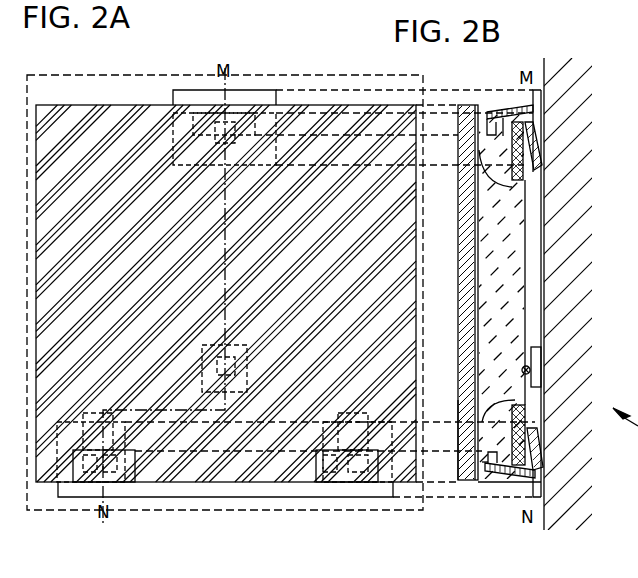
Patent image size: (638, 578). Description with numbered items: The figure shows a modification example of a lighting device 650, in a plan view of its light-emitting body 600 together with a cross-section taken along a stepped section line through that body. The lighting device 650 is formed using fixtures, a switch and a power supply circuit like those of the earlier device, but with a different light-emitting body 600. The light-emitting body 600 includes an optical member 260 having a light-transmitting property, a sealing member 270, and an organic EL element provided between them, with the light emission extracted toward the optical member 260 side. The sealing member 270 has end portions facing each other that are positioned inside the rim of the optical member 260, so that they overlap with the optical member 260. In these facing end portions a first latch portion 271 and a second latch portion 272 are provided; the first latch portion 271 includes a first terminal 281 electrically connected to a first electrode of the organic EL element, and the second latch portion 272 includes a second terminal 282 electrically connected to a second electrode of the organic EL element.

In FIG. 2A, the lighting device 650 is at (60, 73).
In FIG. 2A, the light-emitting body 600 is at (100, 156).
In FIG. 2B, the optical member 260 is at (462, 104).
In FIG. 2B, the second latch portion 272 is at (473, 202).
In FIG. 2B, the first latch portion 271 is at (461, 411).
In FIG. 2B, the sealing member 270 is at (520, 302).
In FIG. 2B, the second terminal 282 is at (541, 171).
In FIG. 2B, the first terminal 281 is at (544, 416).